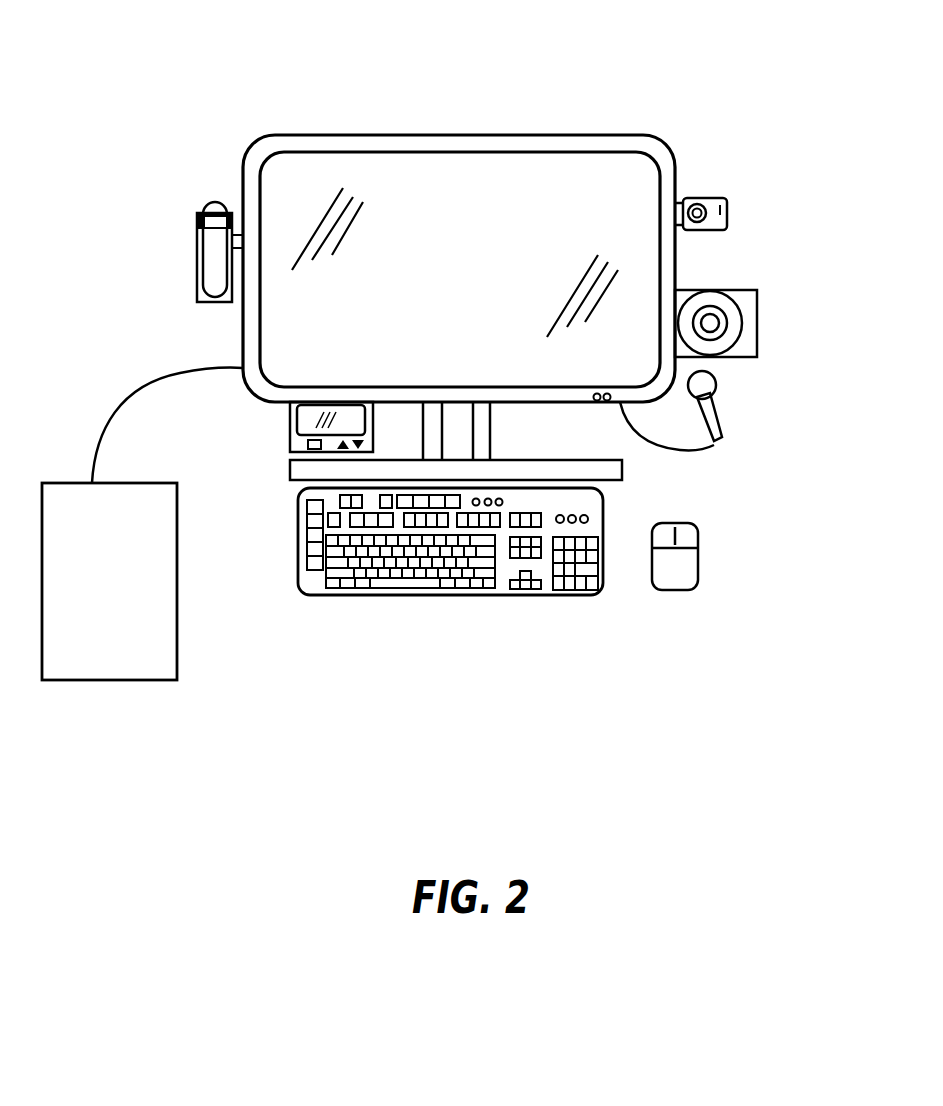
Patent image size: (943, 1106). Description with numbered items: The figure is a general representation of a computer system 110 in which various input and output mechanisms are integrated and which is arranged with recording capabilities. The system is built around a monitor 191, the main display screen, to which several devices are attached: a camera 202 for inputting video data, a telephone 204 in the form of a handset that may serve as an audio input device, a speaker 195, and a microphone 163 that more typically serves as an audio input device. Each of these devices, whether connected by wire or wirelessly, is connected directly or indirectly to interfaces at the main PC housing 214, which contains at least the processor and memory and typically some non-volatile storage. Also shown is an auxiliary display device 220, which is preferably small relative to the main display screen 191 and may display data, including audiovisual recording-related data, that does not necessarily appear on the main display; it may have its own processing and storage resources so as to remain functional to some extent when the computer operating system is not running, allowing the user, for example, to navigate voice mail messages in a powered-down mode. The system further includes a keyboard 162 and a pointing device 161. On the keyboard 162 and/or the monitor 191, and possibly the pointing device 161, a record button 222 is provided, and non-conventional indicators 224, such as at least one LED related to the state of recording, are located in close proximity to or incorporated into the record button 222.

The computer system 110 is at (190, 90).
The monitor 191 is at (236, 164).
The telephone 204 is at (210, 255).
The auxiliary display device 220 is at (283, 421).
The record button 222 is at (386, 495).
The indicators 224 is at (597, 402).
The camera 202 is at (727, 210).
The speaker 195 is at (755, 345).
The microphone 163 is at (710, 413).
The keyboard 162 is at (553, 596).
The pointing device 161 is at (699, 572).
The main PC housing 214 is at (162, 650).